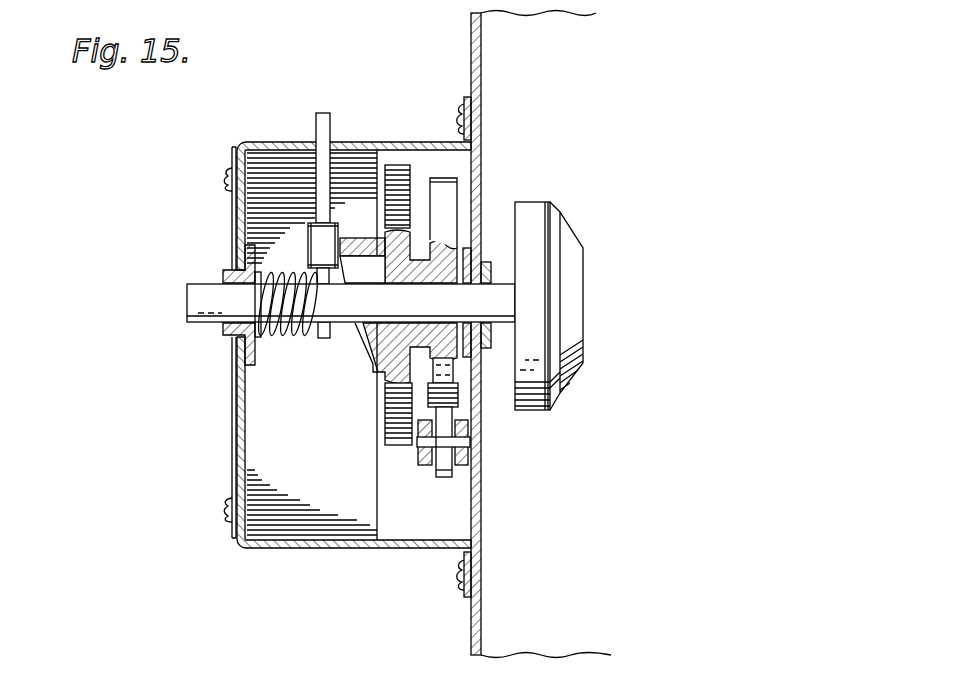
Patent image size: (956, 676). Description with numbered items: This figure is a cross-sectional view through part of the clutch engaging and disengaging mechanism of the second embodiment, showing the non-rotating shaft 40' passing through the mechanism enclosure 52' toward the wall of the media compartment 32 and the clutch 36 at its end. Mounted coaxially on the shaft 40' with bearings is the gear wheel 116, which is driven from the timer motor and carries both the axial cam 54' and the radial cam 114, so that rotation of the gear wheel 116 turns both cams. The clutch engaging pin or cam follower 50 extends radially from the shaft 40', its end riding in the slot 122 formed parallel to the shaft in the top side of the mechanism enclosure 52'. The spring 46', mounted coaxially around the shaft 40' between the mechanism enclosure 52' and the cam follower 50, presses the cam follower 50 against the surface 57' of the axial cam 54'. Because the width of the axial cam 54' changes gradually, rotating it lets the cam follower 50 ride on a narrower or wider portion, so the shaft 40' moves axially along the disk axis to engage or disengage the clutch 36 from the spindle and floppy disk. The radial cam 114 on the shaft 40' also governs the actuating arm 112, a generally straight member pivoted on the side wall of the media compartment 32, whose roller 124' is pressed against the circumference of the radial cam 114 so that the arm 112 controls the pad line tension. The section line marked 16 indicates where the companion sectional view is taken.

The section line 16- 16 is at (365, 4).
The media compartment 32 is at (471, 617).
The clutch 36 is at (531, 412).
The shaft 40' is at (318, 303).
The spring 46' is at (243, 299).
The clutch engaging pin or cam follower 50 is at (262, 203).
The mechanism enclosure 52' is at (319, 332).
The axial cam 54' is at (397, 284).
The surface of axial cam 57' is at (340, 320).
The actuating arm 112 is at (466, 457).
The radial cam 114 is at (448, 180).
The gear wheel 116 is at (393, 166).
The slot 122 is at (293, 143).
The bolt 124' is at (486, 437).